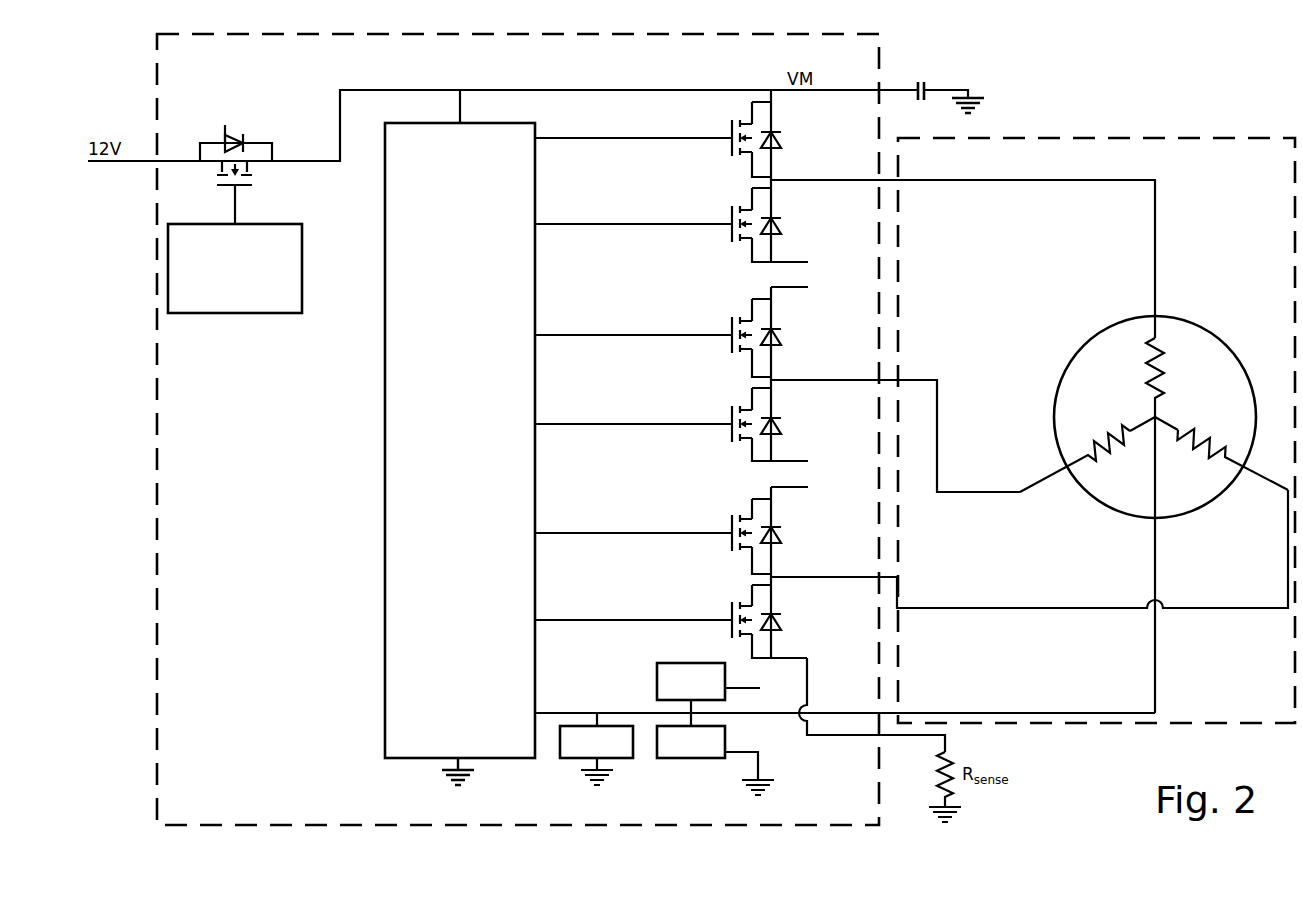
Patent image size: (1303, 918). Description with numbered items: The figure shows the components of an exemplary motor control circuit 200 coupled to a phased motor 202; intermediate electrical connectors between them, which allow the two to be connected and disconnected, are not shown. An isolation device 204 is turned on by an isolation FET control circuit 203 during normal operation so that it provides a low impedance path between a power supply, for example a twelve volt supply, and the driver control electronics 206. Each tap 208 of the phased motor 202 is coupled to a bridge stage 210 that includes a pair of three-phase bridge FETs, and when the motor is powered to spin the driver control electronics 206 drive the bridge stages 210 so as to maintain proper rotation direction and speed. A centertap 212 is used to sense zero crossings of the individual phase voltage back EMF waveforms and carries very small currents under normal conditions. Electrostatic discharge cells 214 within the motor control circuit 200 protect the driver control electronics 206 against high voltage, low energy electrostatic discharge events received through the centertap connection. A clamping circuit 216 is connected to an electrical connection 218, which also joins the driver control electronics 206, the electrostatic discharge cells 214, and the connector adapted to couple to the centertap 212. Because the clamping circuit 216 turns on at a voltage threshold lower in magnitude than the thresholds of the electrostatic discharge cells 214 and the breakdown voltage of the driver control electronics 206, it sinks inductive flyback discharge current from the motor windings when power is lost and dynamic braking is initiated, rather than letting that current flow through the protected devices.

The motor control circuit 200 is at (518, 429).
The phased motor 202 is at (1096, 430).
The isolation FET control circuit 203 is at (235, 268).
The isolation device 204 is at (283, 90).
The driver control electronics 206 is at (460, 454).
The tap 208 is at (1157, 295).
The bridge stage 210 is at (672, 187).
The centertap 212 is at (1155, 582).
The electrostatic discharge cells 214 is at (657, 682).
The clamping circuit 216 is at (572, 760).
The electrical connection 218 is at (763, 715).